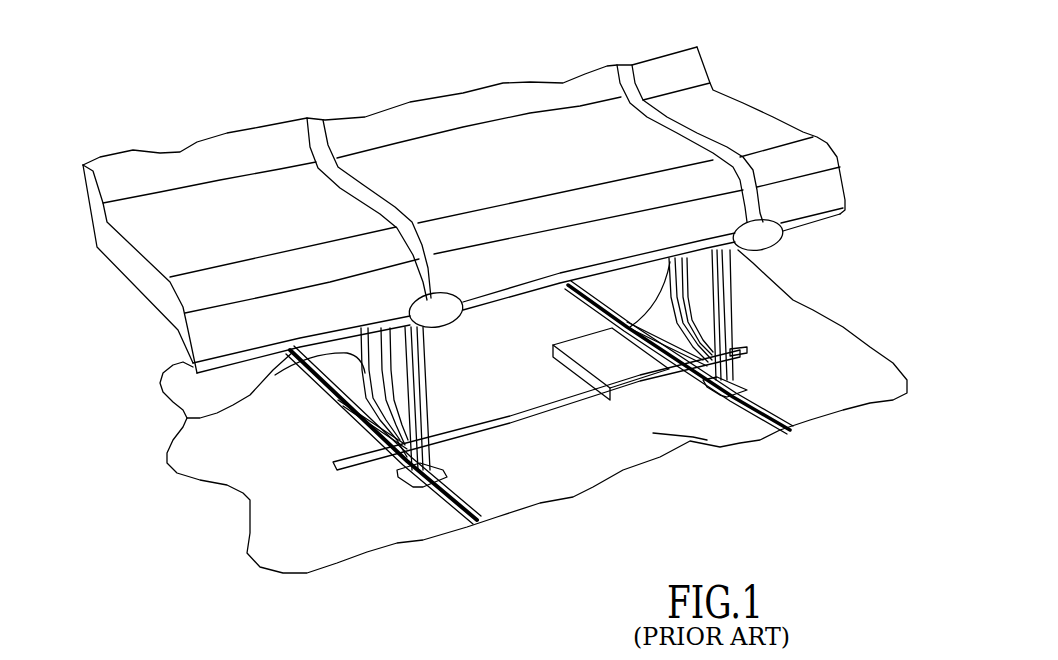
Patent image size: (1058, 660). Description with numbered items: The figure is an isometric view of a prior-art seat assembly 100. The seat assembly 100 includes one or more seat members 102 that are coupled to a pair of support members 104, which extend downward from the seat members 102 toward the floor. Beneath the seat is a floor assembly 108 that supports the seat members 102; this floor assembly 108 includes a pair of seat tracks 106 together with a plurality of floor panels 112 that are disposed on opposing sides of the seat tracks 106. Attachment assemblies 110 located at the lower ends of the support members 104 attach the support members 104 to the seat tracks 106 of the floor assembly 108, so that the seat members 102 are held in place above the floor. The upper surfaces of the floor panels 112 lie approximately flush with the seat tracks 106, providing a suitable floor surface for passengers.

The seat assembly 100 is at (209, 61).
The seat members 102 is at (410, 117).
The support members 104 is at (183, 418).
The seat tracks 106 is at (782, 388).
The floor assembly 108 is at (170, 507).
The attachment assemblies 110 is at (436, 424).
The floor panels 112 is at (350, 508).